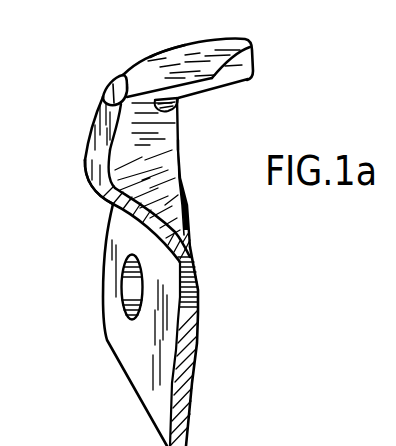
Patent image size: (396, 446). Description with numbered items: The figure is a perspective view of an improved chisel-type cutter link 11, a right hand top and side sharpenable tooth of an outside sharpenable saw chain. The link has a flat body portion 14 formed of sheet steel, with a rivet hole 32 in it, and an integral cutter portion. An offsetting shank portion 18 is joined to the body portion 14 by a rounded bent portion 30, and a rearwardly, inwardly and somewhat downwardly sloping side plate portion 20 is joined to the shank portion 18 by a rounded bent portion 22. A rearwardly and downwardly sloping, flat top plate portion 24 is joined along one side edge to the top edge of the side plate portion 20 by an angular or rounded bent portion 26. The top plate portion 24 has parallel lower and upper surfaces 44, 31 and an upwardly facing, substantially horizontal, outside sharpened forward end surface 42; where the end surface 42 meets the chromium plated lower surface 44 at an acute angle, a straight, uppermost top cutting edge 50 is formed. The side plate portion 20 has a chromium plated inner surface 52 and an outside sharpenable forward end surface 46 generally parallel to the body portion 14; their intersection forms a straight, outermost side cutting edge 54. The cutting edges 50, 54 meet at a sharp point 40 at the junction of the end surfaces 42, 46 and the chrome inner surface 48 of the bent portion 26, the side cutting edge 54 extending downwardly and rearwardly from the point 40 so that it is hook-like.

The cutter link 11 is at (209, 255).
The body portion 14 is at (197, 343).
The shank portion 18 is at (160, 190).
The side plate portion 20 is at (169, 130).
The bent portion 22 is at (161, 153).
The top plate portion 24 is at (161, 48).
The bent portion 26 is at (123, 75).
The bent portion 30 is at (178, 212).
The upper surface 31 is at (217, 38).
The hole 32 is at (132, 293).
The point 40 is at (113, 100).
The end surface 42 is at (190, 57).
The lower surface 44 is at (238, 80).
The end surface 46 is at (100, 118).
The inner surface 48 is at (180, 101).
The top cutting edge 50 is at (251, 47).
The inner surface 52 is at (178, 117).
The side cutting edge 54 is at (104, 138).